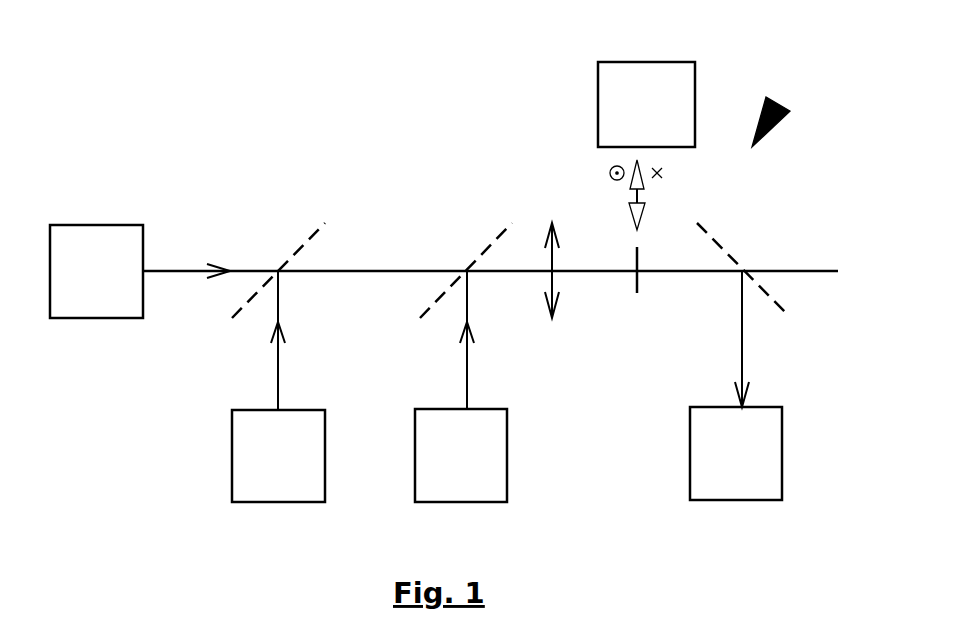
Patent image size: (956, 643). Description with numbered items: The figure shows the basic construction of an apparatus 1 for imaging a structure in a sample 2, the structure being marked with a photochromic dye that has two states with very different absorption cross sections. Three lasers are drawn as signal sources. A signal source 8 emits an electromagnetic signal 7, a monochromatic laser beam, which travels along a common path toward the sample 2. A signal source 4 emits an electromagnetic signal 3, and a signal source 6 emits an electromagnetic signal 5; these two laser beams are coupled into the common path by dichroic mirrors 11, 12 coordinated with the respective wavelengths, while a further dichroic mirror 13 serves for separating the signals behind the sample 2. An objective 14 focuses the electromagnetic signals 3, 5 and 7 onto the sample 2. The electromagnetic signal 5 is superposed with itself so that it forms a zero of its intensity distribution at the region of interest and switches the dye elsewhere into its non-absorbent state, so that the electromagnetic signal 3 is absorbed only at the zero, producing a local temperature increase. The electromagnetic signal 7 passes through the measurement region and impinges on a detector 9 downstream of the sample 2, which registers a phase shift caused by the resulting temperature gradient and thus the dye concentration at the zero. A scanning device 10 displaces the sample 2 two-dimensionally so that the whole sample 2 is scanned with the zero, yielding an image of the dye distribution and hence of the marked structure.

The apparatus 1 is at (770, 117).
The sample 2 is at (640, 258).
The electromagnetic signal 3 is at (277, 373).
The signal source 4 is at (232, 478).
The electromagnetic signal 5 is at (468, 363).
The signal source 6 is at (415, 477).
The electromagnetic signal 7 is at (173, 268).
The signal source 8 is at (80, 320).
The detector 9 is at (690, 473).
The scanning device 10 is at (662, 61).
The dichroic mirror 11 is at (300, 247).
The dichroic mirror 12 is at (488, 247).
The dichroic mirror 13 is at (720, 248).
The objective 14 is at (566, 201).